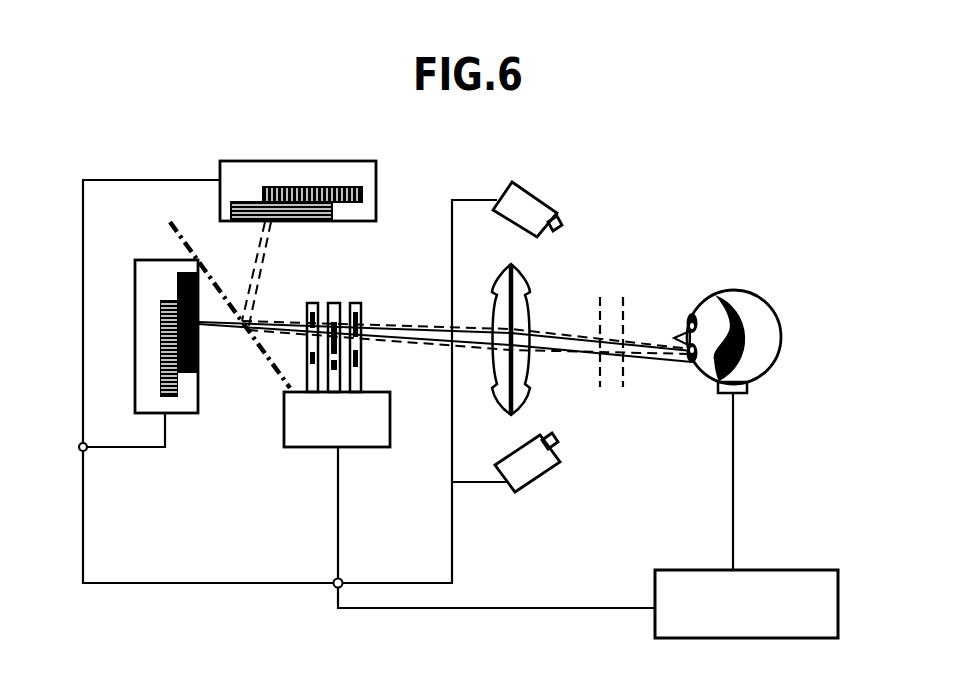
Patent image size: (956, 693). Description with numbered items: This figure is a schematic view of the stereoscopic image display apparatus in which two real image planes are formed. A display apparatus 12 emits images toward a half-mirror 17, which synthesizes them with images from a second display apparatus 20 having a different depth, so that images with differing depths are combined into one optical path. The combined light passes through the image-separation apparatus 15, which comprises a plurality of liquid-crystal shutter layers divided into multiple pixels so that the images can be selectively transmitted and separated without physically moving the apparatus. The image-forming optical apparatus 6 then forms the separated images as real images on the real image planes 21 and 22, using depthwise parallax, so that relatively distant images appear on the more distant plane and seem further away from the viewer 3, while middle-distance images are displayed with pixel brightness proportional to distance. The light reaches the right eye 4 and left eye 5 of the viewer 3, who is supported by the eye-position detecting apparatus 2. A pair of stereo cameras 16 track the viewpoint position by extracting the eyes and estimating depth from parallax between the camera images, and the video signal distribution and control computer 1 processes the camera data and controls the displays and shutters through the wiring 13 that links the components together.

The video signal distribution and control computer 1 is at (777, 570).
The apparatus for detecting the positions of the viewer's left and right eyes 2 is at (747, 390).
The viewer 3 is at (747, 289).
The right eye 4 is at (691, 313).
The left eye 5 is at (697, 367).
The image-forming optical apparatus 6 is at (529, 283).
The display apparatus 12 is at (177, 415).
The signal line 13 is at (362, 608).
The image-separation apparatus 15 is at (367, 448).
The stereo cameras 16 is at (530, 188).
The half-mirror 17 is at (180, 236).
The display apparatus 20 is at (377, 187).
The real image plane 21 is at (600, 388).
The real image plane 22 is at (623, 388).